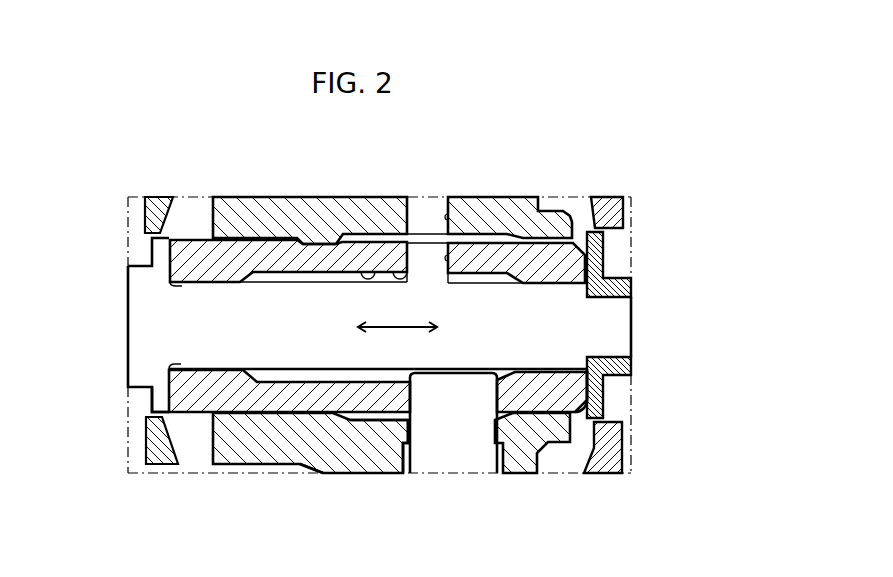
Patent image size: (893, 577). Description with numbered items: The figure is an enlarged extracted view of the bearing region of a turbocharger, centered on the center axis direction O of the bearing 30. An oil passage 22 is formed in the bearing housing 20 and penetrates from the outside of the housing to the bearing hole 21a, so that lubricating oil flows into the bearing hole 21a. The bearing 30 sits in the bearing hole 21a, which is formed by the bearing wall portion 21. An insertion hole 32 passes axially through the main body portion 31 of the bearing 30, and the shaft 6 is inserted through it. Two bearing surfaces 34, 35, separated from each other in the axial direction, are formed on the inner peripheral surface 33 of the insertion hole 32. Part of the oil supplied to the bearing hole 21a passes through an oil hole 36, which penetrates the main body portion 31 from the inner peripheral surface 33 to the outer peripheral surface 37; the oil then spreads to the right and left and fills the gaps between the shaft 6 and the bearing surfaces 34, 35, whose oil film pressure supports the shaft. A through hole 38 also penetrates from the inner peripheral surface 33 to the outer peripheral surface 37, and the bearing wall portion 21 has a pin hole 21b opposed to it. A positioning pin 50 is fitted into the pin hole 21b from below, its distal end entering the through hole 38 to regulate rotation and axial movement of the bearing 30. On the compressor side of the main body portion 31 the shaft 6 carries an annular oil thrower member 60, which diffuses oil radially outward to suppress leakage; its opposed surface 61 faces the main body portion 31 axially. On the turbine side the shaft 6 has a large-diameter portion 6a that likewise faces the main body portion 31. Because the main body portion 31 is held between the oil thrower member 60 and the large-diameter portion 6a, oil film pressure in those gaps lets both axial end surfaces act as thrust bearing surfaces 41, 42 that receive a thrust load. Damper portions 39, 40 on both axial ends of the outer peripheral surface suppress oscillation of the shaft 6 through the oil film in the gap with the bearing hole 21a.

The large-diameter portion 6a is at (152, 216).
The bearing housing 20 is at (162, 197).
The bearing hole 21a is at (260, 242).
The main body portion 31 is at (348, 246).
The bearing 30 is at (386, 246).
The inner peripheral surface 33 is at (390, 272).
The insertion hole 32 is at (396, 280).
The oil passage 22 is at (463, 232).
The oil hole 36 is at (482, 230).
The shaft 6 is at (543, 318).
The opposed surface 61 is at (616, 273).
The oil thrower member 60 is at (628, 252).
The thrust bearing surface 41 is at (166, 394).
The bearing surface 34 is at (212, 372).
The damper portion 39 is at (240, 412).
The bearing wall portion 21 is at (262, 448).
The outer peripheral surface 37 is at (322, 425).
The through hole 38 is at (398, 416).
The pin hole 21b is at (412, 430).
The positioning pin 50 is at (473, 450).
The bearing surface 35 is at (543, 445).
The damper portion 40 is at (560, 442).
The thrust bearing surface 42 is at (607, 390).
The center axis direction O is at (398, 327).